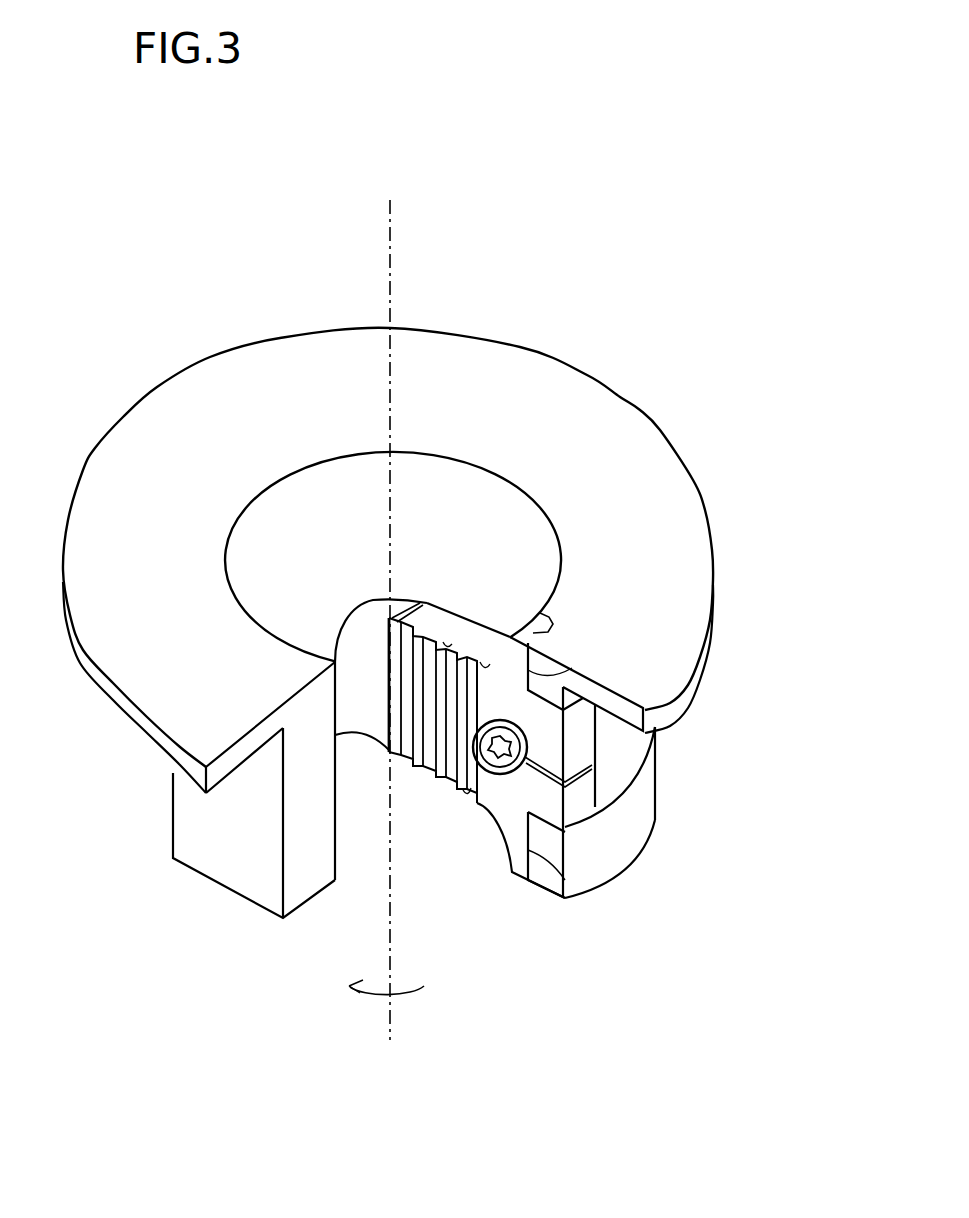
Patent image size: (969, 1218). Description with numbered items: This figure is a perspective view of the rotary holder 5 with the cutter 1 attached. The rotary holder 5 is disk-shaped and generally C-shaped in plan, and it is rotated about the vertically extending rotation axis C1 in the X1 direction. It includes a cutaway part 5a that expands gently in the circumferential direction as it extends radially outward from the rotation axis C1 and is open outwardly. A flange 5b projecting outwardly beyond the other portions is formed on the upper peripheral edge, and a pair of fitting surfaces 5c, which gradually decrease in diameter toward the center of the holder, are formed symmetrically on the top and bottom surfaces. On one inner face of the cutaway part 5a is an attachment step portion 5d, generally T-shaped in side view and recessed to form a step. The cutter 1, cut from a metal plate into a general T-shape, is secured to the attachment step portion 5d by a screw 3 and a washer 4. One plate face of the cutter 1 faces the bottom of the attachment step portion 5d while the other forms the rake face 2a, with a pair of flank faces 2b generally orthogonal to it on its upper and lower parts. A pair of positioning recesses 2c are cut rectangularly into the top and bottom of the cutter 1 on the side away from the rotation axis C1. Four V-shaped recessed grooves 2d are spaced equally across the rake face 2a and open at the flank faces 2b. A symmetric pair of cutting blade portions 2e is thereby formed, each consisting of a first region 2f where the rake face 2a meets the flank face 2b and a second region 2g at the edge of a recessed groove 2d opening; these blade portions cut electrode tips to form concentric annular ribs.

The cutter 1 is at (398, 572).
The rake face 2a is at (552, 760).
The flank faces 2b is at (433, 620).
The positioning recesses 2c is at (527, 678).
The recessed grooves 2d is at (433, 907).
The cutting blade portions 2e is at (620, 485).
The first region 2f is at (483, 667).
The second region 2g is at (447, 644).
The screw 3 is at (540, 753).
The washer 4 is at (530, 795).
The rotary holder 5 is at (102, 372).
The cutaway part 5a is at (335, 790).
The flange 5b is at (155, 748).
The fitting surfaces 5c is at (497, 507).
The attachment step portion 5d is at (533, 637).
The rotation axis C1 is at (392, 240).
The X1 direction X1 is at (360, 989).